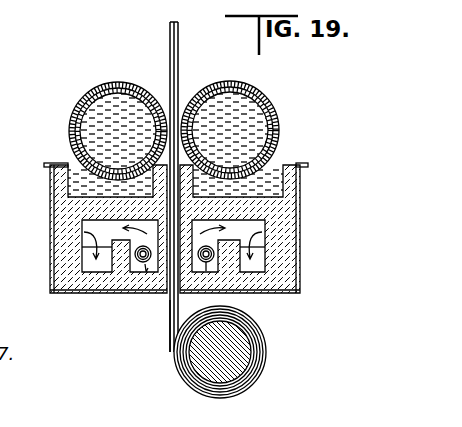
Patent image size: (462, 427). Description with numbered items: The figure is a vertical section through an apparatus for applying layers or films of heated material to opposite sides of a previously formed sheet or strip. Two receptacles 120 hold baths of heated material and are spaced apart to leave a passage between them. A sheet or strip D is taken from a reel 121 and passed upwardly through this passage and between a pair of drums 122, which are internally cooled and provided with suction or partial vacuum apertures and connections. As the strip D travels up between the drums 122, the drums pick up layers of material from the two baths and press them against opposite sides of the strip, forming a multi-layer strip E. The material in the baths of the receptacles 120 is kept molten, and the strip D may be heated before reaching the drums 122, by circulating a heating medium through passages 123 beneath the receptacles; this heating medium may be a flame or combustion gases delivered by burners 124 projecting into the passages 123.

The receptacle 120 is at (60, 189).
The reel 121 is at (250, 354).
The drum 122 is at (88, 98).
The passage 123 is at (84, 233).
The burner 124 is at (141, 263).
The multi-layer strip E is at (168, 27).
The strip D is at (169, 323).